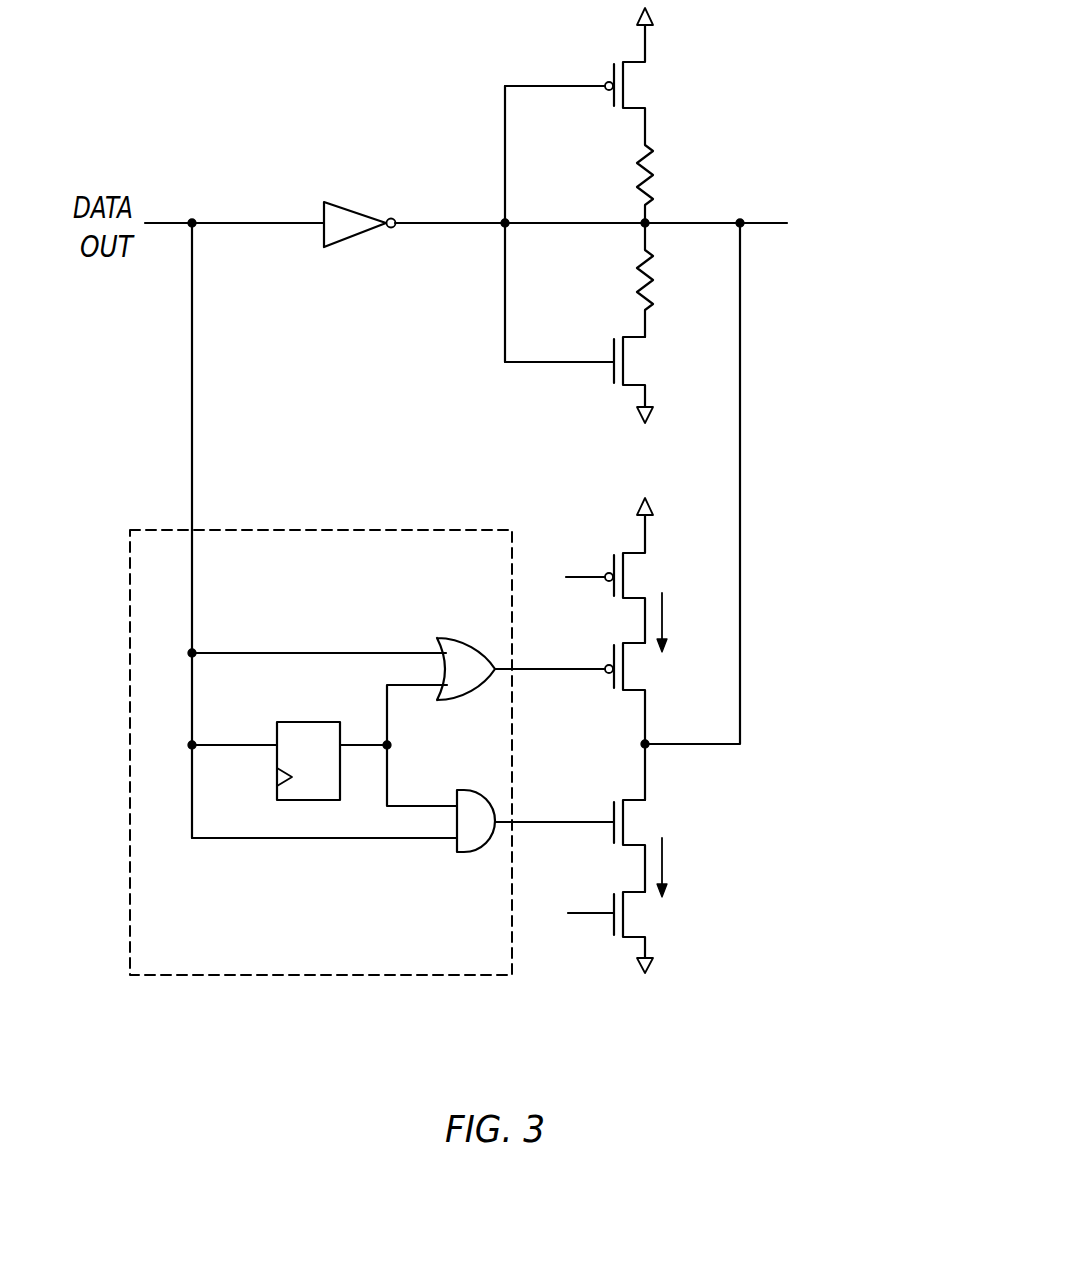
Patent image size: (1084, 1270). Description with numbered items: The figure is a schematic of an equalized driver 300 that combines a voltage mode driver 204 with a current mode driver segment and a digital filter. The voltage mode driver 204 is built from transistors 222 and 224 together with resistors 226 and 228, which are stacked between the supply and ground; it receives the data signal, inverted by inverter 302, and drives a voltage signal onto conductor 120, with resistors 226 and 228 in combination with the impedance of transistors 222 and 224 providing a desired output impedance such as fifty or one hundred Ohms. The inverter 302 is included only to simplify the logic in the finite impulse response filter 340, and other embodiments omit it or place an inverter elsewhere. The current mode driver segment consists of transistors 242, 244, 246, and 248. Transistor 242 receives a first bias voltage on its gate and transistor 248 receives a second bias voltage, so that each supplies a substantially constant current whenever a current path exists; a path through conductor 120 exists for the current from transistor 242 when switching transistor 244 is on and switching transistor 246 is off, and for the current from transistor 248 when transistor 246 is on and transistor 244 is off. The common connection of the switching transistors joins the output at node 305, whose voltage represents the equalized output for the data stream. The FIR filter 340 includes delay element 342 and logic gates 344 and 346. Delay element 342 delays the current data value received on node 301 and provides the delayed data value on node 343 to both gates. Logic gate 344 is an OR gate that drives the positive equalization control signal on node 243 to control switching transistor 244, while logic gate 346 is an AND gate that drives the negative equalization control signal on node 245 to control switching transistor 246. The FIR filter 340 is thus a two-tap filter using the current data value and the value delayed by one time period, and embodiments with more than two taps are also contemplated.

The conductor 120 is at (872, 222).
The voltage mode driver 204 is at (671, 211).
The transistor 222 is at (623, 60).
The transistor 224 is at (628, 335).
The resistor 226 is at (640, 178).
The resistor 228 is at (640, 256).
The transistor 242 is at (623, 551).
The node 243 is at (534, 668).
The switching transistor 244 is at (623, 695).
The node 245 is at (534, 821).
The switching transistor 246 is at (623, 850).
The transistor 248 is at (623, 940).
The equalized driver 300 is at (687, 779).
The node 301 is at (254, 221).
The inverter 302 is at (348, 240).
The node 305 is at (740, 424).
The finite impulse response (FIR) filter 340 is at (418, 529).
The delay element 342 is at (287, 721).
The node 343 is at (385, 708).
The logic gate 344 is at (452, 636).
The logic gate 346 is at (464, 855).